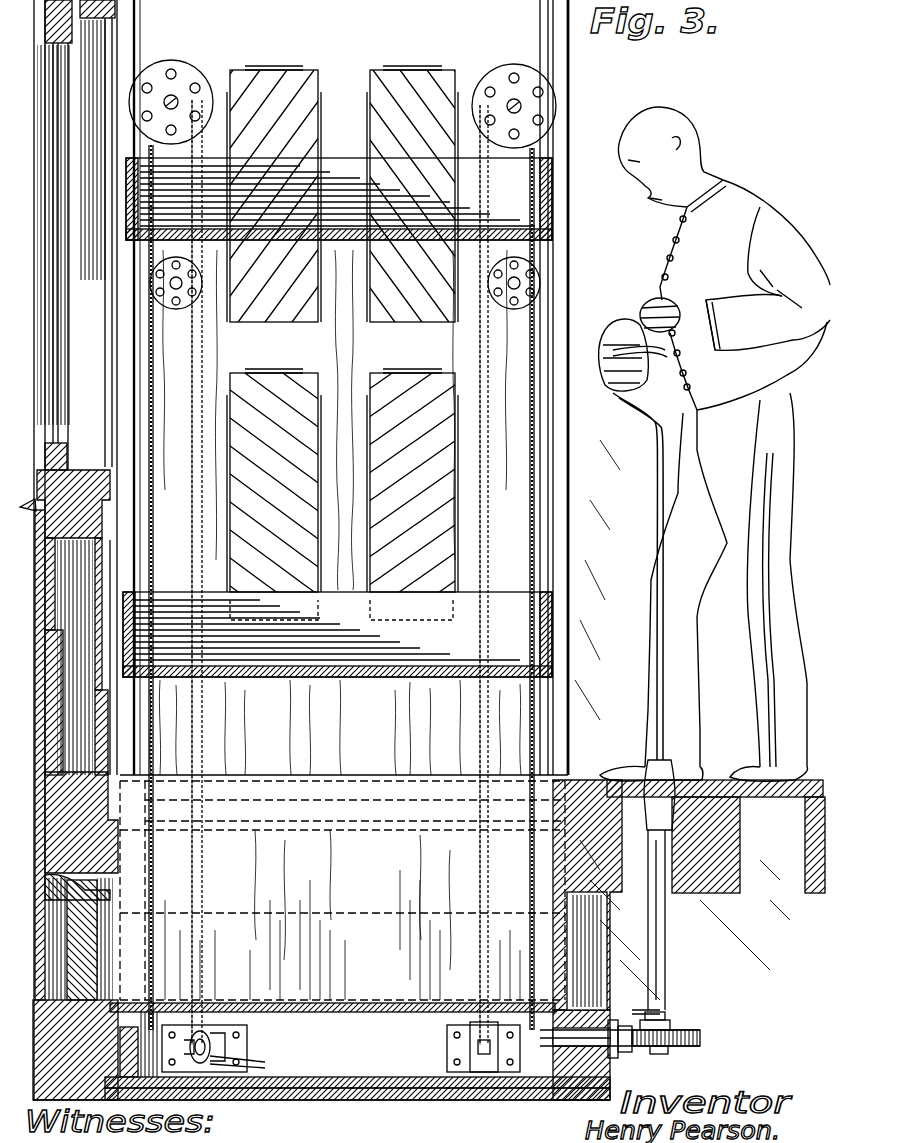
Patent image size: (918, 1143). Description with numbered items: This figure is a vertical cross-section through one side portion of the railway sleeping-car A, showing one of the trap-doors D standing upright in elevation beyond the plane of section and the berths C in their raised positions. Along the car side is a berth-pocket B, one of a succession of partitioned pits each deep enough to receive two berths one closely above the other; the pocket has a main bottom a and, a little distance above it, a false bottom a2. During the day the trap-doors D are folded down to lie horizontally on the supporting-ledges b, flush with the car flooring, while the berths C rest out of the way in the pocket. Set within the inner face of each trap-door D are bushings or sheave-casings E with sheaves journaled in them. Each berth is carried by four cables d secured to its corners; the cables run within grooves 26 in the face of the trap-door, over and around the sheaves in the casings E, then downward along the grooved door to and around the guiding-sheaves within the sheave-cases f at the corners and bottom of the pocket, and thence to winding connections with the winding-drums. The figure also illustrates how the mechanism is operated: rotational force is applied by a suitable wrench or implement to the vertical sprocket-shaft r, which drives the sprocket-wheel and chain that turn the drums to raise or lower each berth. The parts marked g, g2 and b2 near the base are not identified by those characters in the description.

The railway sleeping-car A is at (287, 550).
The grooves 26 is at (152, 440).
The cables d is at (160, 535).
The trap-doors D is at (342, 445).
The berths C is at (337, 571).
The sheave-casings E is at (185, 80).
The berth-pockets B is at (342, 890).
The false bottom a2 is at (392, 1003).
The main bottom a is at (321, 1099).
The bracket b2 is at (580, 1100).
The sheave-cases f is at (250, 1040).
The shaft handle g is at (690, 1028).
The collar g2 is at (620, 1010).
The vertical shaft r is at (648, 838).
The supporting-ledges b is at (112, 832).